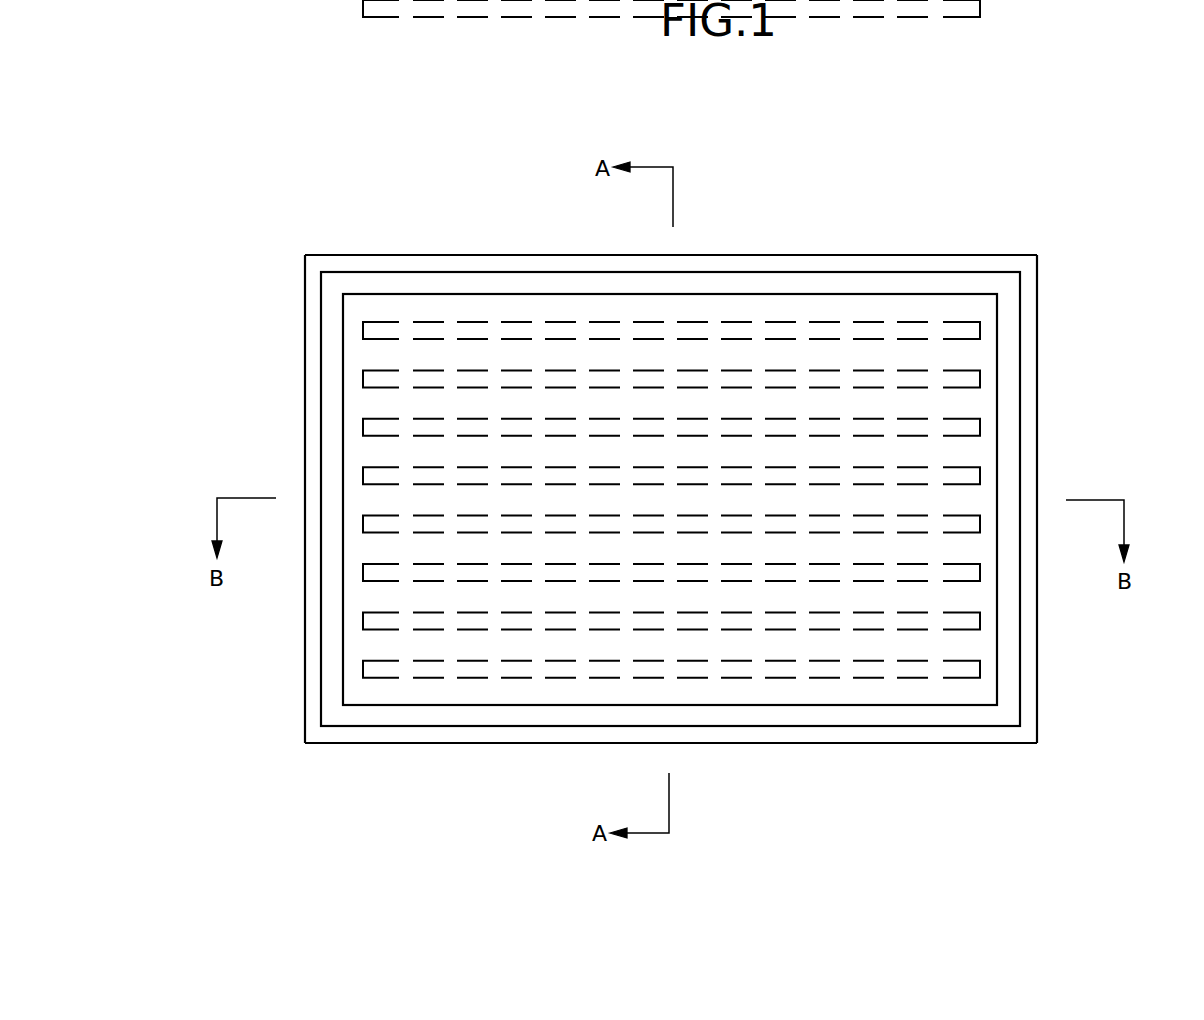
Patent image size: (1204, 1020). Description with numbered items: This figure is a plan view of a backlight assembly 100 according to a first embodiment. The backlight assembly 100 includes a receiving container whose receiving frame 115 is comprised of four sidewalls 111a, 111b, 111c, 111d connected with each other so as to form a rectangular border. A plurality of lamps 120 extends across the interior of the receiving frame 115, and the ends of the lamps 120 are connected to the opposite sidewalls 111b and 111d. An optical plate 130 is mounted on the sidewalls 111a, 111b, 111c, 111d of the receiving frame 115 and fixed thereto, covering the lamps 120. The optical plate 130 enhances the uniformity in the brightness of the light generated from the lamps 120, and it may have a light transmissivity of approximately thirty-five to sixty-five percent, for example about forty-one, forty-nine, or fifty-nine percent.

The backlight assembly 100 is at (1097, 233).
The sidewall 111a is at (745, 255).
The sidewall 111b is at (305, 374).
The sidewall 111c is at (867, 745).
The sidewall 111d is at (1037, 412).
The receiving frame 115 is at (1037, 681).
The lamps 120 is at (830, 322).
The optical plate 130 is at (935, 307).